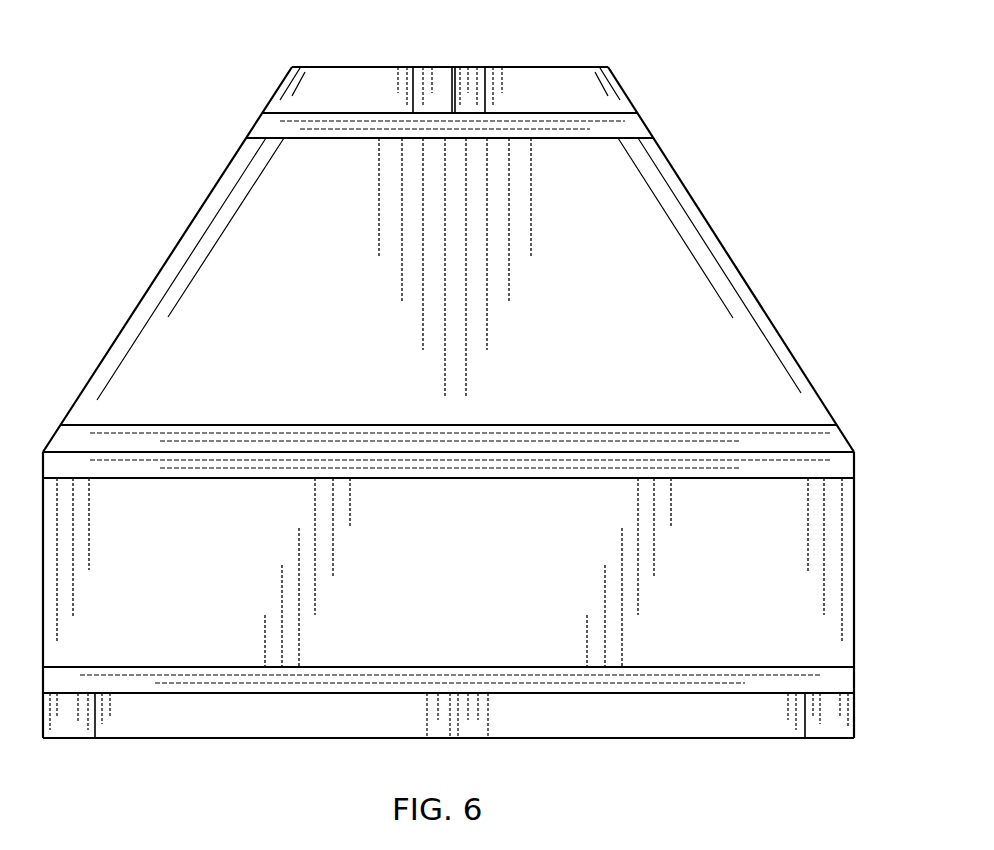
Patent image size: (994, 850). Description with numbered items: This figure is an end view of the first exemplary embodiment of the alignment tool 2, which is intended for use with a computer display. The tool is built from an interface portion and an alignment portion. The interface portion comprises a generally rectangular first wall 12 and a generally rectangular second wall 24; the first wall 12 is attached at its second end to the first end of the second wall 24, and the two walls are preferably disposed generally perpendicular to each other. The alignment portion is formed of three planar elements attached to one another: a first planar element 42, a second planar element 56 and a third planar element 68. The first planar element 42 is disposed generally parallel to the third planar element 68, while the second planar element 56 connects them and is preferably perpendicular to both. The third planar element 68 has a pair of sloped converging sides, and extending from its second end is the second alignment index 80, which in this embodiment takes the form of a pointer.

The alignment tool 2 is at (178, 88).
The second alignment index 80 is at (470, 76).
The third planar element 68 is at (605, 92).
The second planar element 56 is at (755, 341).
The first planar element 42 is at (832, 441).
The second wall 24 is at (832, 613).
The first wall 12 is at (630, 722).